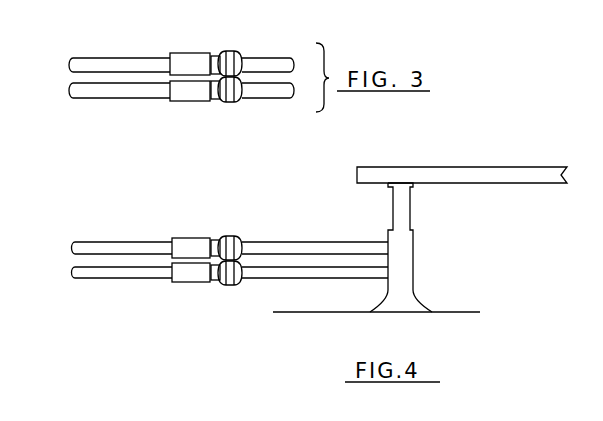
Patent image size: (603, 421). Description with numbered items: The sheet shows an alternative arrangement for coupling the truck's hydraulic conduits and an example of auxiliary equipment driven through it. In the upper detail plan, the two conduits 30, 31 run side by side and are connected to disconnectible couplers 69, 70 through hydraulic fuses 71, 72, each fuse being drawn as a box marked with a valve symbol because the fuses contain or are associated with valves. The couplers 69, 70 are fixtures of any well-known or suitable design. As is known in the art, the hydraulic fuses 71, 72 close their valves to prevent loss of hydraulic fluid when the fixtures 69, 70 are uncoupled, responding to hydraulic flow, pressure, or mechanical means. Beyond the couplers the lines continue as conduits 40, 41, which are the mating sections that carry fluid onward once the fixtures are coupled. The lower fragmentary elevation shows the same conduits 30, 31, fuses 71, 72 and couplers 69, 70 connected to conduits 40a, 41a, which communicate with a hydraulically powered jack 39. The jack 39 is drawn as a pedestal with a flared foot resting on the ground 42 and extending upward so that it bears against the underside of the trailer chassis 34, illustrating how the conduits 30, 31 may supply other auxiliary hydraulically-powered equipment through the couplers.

In FIG. 3, the conduit 30 is at (113, 58).
In FIG. 4, the conduit 30 is at (128, 242).
In FIG. 3, the conduit 31 is at (111, 98).
In FIG. 4, the conduit 31 is at (125, 278).
In FIG. 4, the trailer chassis 34 is at (488, 183).
In FIG. 4, the hydraulically powered jack 39 is at (410, 263).
In FIG. 3, the conduit 40 is at (268, 58).
In FIG. 4, the conduit 40a is at (275, 242).
In FIG. 3, the conduit 41 is at (268, 98).
In FIG. 4, the conduit 41a is at (290, 278).
In FIG. 4, the ground 42 is at (450, 312).
In FIG. 3, the disconnectible coupler 69 is at (225, 51).
In FIG. 4, the disconnectible coupler 69 is at (232, 236).
In FIG. 3, the disconnectible coupler 70 is at (225, 102).
In FIG. 4, the disconnectible coupler 70 is at (225, 285).
In FIG. 3, the hydraulic fuse 71 is at (190, 53).
In FIG. 4, the hydraulic fuse 71 is at (200, 238).
In FIG. 3, the hydraulic fuse 72 is at (197, 101).
In FIG. 4, the hydraulic fuse 72 is at (203, 282).